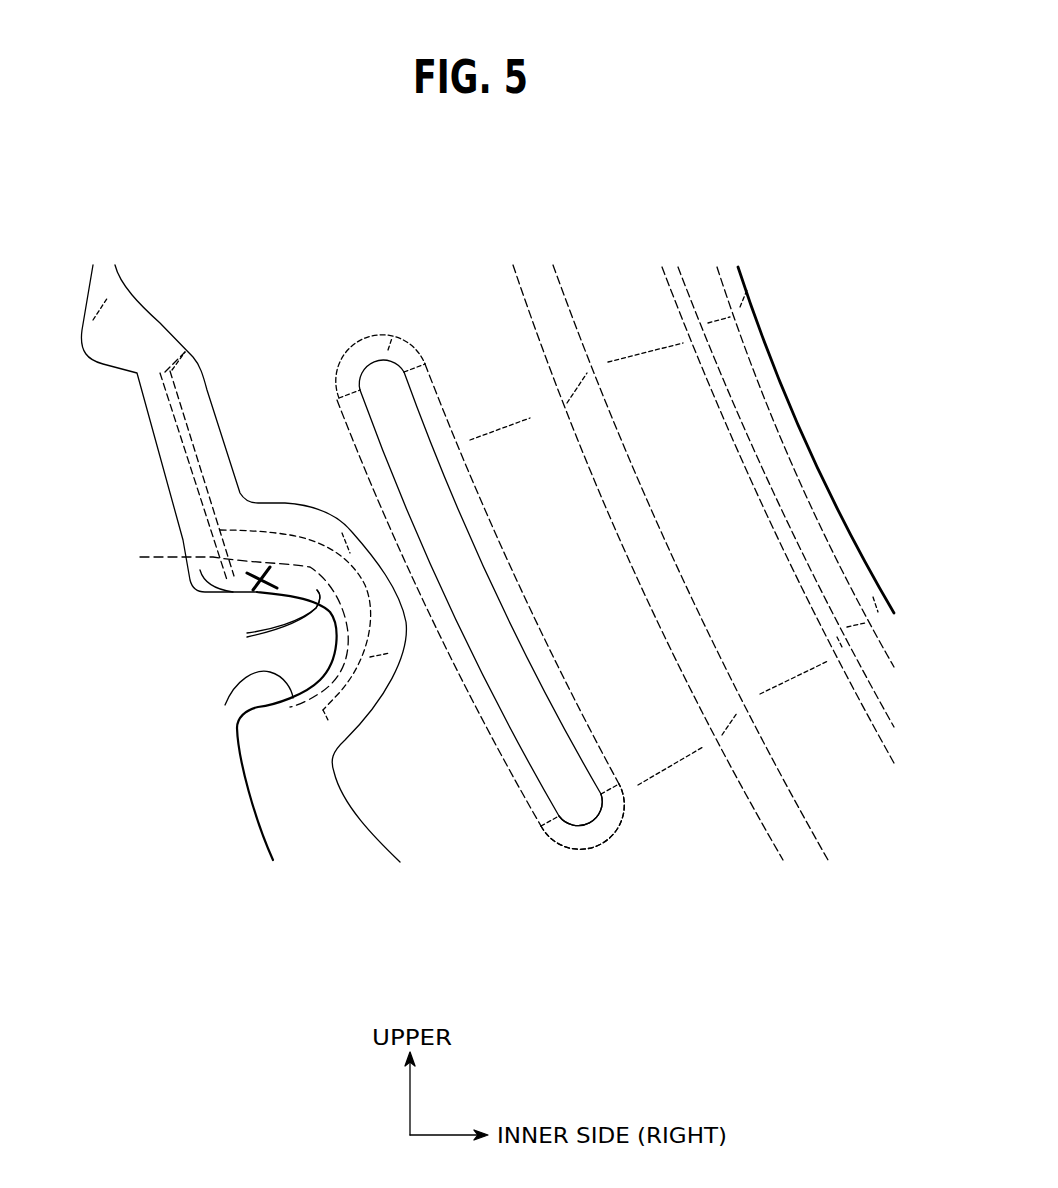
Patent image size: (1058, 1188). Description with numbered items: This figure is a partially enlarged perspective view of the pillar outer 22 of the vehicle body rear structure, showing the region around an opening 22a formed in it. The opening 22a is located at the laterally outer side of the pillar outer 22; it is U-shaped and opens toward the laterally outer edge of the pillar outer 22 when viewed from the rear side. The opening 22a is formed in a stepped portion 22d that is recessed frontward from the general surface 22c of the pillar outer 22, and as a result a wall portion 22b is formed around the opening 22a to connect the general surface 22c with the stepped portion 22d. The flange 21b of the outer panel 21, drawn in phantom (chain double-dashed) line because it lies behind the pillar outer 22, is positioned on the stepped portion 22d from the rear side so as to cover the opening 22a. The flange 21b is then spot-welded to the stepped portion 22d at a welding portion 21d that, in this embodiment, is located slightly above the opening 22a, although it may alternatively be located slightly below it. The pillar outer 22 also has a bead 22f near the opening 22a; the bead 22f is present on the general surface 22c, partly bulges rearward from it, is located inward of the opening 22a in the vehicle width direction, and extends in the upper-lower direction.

The pillar outer 22 is at (705, 287).
The opening 22a is at (225, 705).
The wall portion 22b is at (307, 523).
The general surface 22c is at (255, 332).
The stepped portion 22d is at (247, 637).
The bead 22f is at (543, 760).
The outer panel 21 is at (140, 557).
The flange 21b is at (140, 557).
The welding portion 21d is at (247, 633).